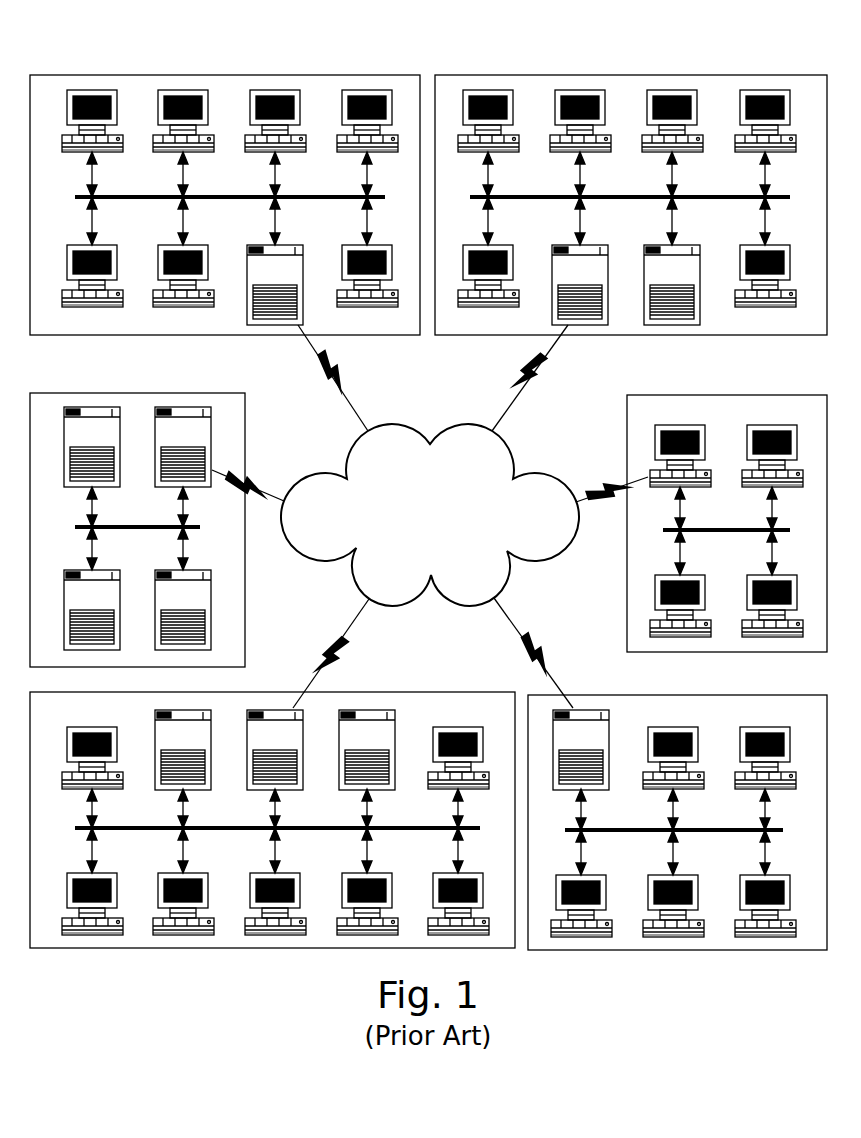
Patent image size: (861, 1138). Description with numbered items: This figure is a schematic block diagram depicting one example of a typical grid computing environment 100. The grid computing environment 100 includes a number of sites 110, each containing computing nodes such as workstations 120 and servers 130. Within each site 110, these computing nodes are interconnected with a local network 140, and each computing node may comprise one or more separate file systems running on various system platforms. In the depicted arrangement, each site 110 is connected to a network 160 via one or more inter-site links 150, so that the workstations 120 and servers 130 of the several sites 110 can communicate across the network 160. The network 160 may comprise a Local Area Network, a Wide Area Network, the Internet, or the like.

The grid computing environment 100 is at (80, 38).
The site 110 is at (428, 494).
The workstation 120 is at (433, 513).
The server 130 is at (382, 515).
The local network 140 is at (432, 513).
The inter-site link 150 is at (320, 374).
The network 160 is at (411, 539).